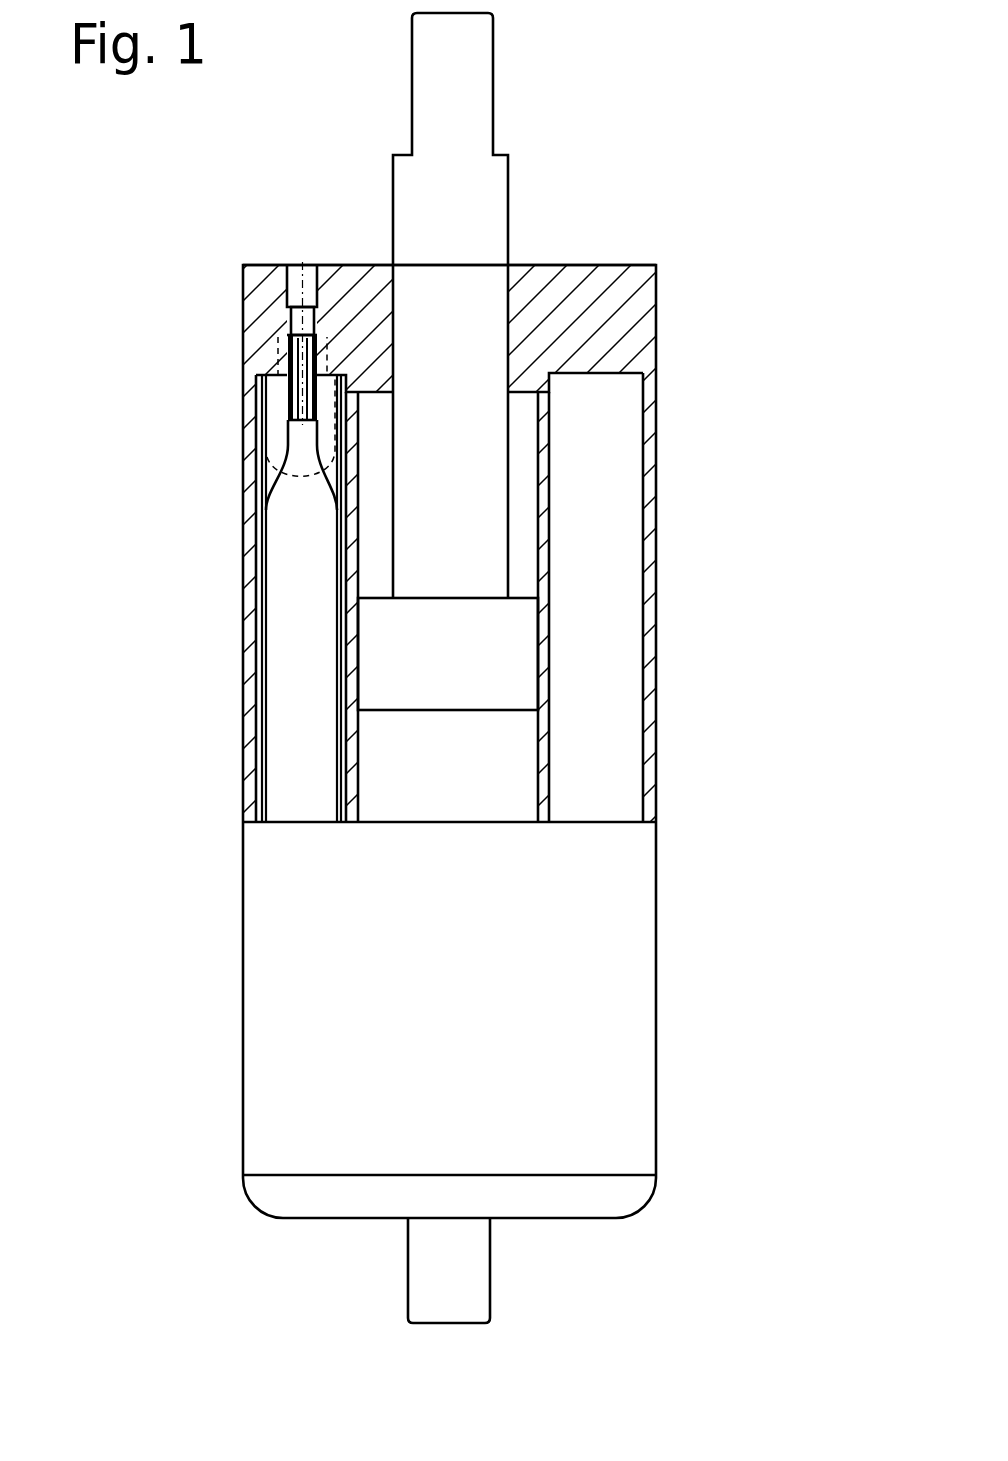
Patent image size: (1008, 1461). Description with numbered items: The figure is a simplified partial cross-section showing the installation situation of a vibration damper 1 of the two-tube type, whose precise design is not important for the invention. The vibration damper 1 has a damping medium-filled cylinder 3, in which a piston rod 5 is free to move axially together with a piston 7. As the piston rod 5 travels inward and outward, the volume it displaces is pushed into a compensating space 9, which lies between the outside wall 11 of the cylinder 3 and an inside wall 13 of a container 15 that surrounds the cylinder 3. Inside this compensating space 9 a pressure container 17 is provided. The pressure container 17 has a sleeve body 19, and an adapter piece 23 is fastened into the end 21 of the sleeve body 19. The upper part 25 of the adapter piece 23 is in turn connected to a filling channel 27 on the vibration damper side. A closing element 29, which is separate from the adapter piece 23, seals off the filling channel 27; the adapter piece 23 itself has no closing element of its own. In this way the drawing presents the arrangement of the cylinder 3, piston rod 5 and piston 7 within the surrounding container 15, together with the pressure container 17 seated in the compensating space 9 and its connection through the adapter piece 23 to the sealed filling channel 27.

The vibration damper 1 is at (749, 1037).
The cylinder 3 is at (550, 663).
The piston rod 5 is at (490, 207).
The piston 7 is at (468, 693).
The compensating space 9 is at (627, 548).
The outside wall 11 is at (573, 822).
The inside wall 13 is at (632, 770).
The container 15 is at (656, 632).
The pressure container 17 is at (267, 470).
The sleeve body 19 is at (307, 613).
The end 21 is at (273, 409).
The adapter piece 23 is at (323, 337).
The upper part 25 is at (285, 362).
The filling channel 27 is at (310, 267).
The closing element 29 is at (288, 317).